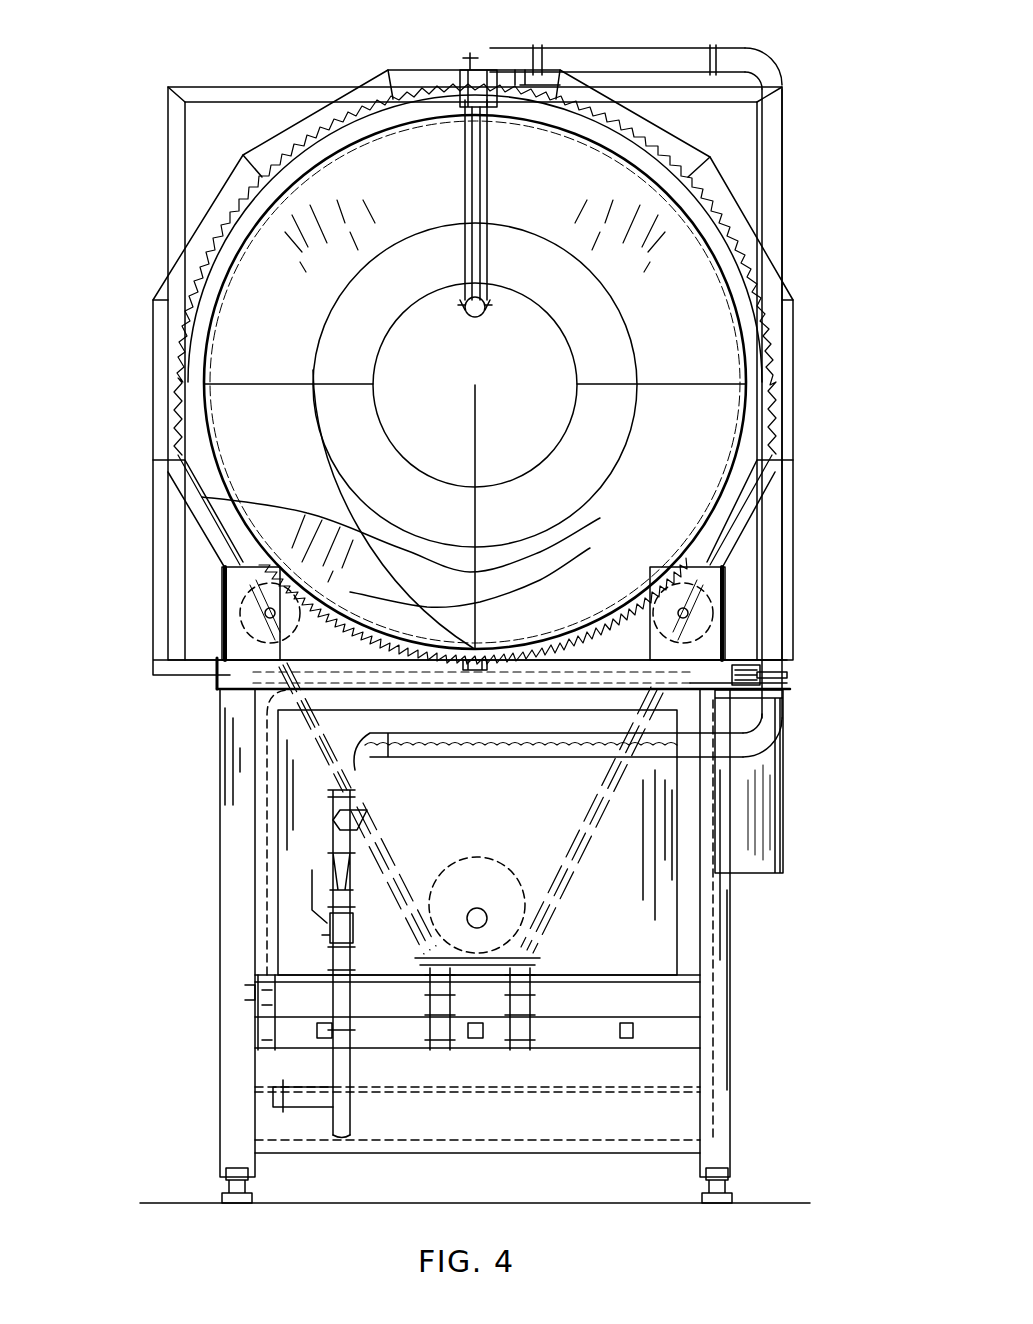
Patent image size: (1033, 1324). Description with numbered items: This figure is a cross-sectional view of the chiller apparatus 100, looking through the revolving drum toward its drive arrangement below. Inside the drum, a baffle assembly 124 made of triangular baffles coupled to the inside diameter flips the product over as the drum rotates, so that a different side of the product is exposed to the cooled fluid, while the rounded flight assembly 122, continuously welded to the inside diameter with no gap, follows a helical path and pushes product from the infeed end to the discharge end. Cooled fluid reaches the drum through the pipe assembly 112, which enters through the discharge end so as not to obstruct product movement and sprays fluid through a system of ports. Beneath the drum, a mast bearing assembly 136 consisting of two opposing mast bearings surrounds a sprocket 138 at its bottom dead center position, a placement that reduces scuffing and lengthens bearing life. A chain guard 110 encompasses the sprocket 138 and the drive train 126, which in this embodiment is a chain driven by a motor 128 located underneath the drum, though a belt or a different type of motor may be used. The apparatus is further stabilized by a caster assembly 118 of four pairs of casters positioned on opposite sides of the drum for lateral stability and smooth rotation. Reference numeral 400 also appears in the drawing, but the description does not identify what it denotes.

The chiller apparatus 100 is at (180, 60).
The chain guard 110 is at (718, 187).
The pipe assembly 112 is at (768, 73).
The caster assembly 118 is at (713, 617).
The flight assembly 122 is at (537, 583).
The baffle assembly 124 is at (580, 530).
The drive train 126 is at (597, 820).
The motor 128 is at (455, 880).
The mast bearing assembly 136 is at (490, 657).
The sprocket 138 is at (700, 712).
The drum guard 400 is at (250, 487).